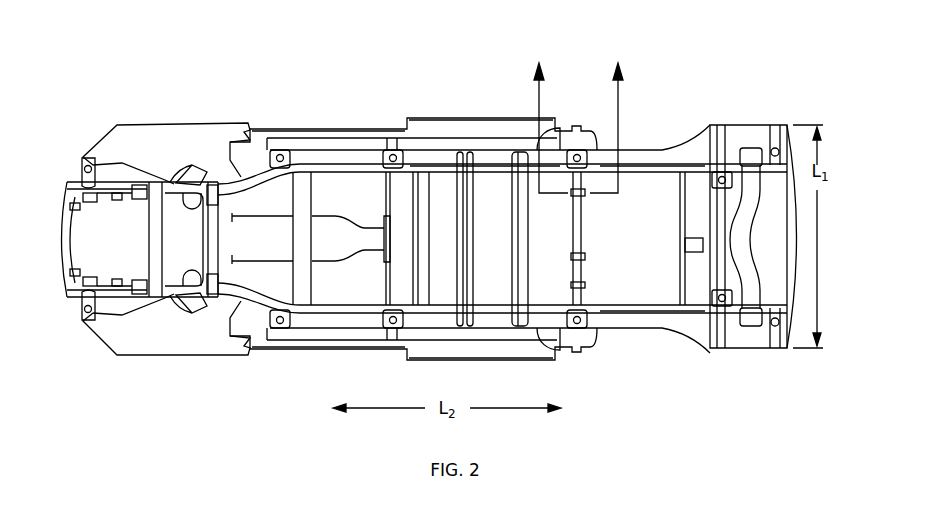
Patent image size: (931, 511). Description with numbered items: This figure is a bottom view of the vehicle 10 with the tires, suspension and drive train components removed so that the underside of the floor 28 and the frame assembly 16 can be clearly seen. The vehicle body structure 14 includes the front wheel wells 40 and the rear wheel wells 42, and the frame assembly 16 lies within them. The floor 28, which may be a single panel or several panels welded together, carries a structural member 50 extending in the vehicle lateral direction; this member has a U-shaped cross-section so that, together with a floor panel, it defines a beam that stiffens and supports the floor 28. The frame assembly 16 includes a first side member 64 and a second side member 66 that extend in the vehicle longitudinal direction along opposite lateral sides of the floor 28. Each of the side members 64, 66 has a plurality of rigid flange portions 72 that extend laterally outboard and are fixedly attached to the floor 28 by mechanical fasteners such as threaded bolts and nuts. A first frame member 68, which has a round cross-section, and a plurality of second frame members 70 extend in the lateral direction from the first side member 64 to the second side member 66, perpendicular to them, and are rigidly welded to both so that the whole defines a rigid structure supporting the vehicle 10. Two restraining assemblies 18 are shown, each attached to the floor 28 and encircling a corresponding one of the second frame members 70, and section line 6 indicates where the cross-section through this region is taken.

The vehicle 10 is at (150, 91).
The vehicle body structure 14 is at (493, 112).
The frame assembly 16 is at (441, 150).
The restraining assembly 18 is at (570, 283).
The floor 28 is at (361, 156).
The front wheel wells 40 is at (201, 143).
The rear wheel wells 42 is at (678, 148).
The structural member 50 is at (572, 147).
The first side member 64 is at (657, 167).
The second side member 66 is at (657, 308).
The first frame member 68 is at (582, 223).
The second frame members 70 is at (65, 243).
The flange portions 72 is at (86, 164).
The section line 6- 6 is at (579, 115).